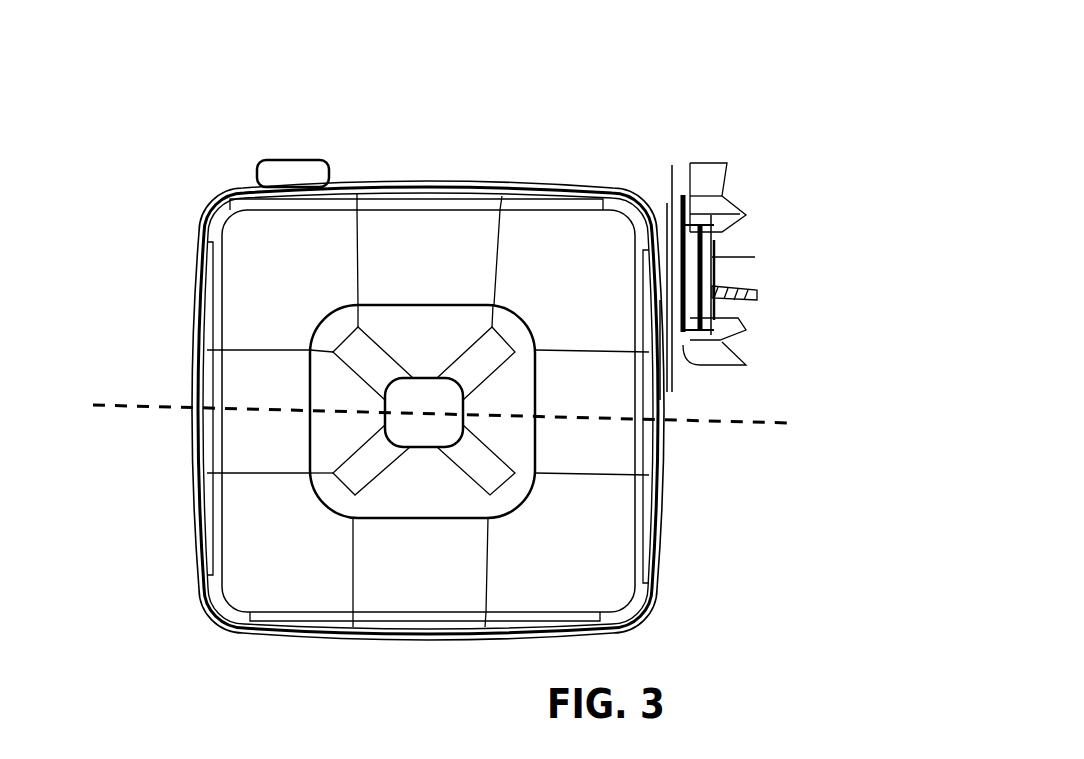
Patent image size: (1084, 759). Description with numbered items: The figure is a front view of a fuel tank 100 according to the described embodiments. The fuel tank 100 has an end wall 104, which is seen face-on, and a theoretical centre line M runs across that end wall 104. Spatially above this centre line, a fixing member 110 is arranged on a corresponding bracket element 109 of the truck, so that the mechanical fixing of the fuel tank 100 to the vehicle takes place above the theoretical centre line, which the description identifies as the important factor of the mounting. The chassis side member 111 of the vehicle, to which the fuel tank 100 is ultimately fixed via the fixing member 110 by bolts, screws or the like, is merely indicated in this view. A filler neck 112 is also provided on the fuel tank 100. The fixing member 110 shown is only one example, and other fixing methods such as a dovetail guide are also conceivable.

The fuel tank 100 is at (467, 117).
The end wall 104 is at (565, 545).
The bracket element 109 is at (710, 236).
The fixing member 110 is at (676, 376).
The chassis side member 111 is at (718, 178).
The filler neck 112 is at (280, 173).